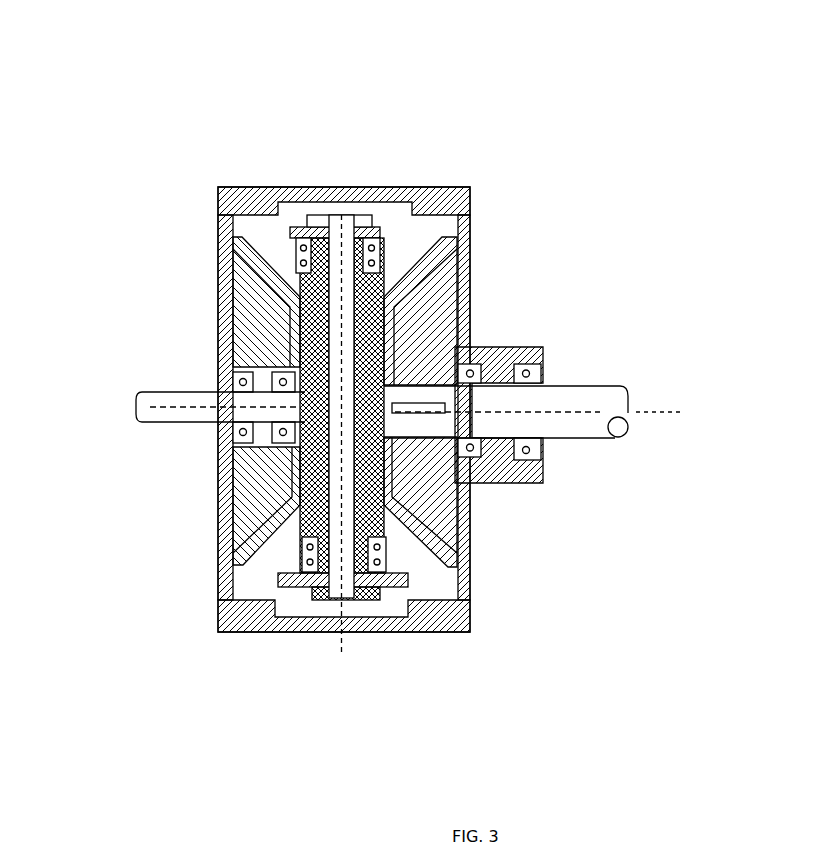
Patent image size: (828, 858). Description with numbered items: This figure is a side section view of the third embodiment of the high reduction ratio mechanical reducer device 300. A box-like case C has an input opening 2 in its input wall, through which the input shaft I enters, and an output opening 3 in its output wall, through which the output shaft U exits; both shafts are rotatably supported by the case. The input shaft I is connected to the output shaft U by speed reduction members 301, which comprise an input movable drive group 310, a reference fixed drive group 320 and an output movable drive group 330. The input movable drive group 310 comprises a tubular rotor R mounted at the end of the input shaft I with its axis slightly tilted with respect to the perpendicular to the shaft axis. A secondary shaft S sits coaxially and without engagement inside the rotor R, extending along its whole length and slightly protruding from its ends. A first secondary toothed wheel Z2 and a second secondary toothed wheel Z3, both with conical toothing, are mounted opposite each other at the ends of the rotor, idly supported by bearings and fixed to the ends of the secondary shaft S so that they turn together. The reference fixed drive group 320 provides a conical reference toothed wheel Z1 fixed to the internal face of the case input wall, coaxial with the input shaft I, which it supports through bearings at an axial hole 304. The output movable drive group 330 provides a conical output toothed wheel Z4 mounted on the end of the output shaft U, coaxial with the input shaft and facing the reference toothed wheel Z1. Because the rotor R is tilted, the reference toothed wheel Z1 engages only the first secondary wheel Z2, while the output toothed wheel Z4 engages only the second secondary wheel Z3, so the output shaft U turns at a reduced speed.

The reducer device 300 is at (364, 376).
The input movable drive group 310 is at (392, 187).
The speed reduction members 301 is at (218, 617).
The reference fixed drive group 320 is at (258, 325).
The output movable drive group 330 is at (427, 298).
The axial hole 304 is at (250, 420).
The input opening 2 is at (220, 400).
The output opening 3 is at (547, 365).
The secondary shaft S is at (340, 222).
The box-like case C is at (250, 581).
The rotor R is at (240, 447).
The input shaft I is at (170, 402).
The output shaft U is at (580, 402).
The reference toothed wheel Z1 is at (253, 295).
The first secondary toothed wheel Z2 is at (390, 250).
The second secondary toothed wheel Z3 is at (433, 567).
The output toothed wheel Z4 is at (425, 478).